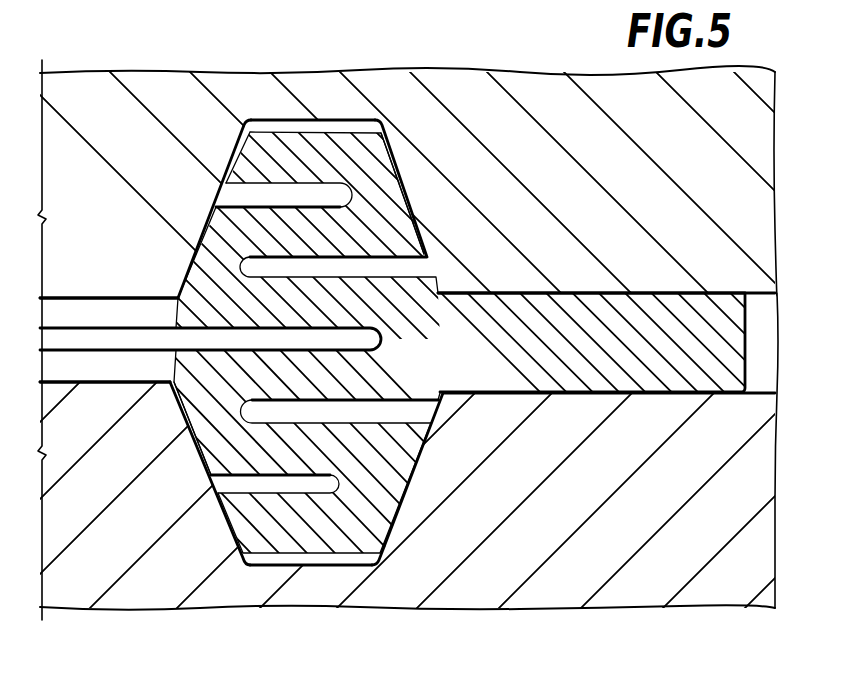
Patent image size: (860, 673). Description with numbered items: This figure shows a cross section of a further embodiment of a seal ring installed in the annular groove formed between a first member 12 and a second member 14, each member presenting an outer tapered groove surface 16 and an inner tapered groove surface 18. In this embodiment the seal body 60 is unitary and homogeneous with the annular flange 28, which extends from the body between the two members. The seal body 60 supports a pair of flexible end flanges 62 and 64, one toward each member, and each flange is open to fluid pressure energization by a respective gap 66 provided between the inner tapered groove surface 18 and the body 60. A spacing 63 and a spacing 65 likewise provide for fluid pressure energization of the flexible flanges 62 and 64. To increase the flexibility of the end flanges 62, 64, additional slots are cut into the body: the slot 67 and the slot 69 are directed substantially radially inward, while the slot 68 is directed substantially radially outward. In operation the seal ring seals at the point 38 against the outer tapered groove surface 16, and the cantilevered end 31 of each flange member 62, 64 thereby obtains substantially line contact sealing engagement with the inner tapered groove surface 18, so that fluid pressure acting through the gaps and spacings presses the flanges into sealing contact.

The first member 12 is at (748, 187).
The second member 14 is at (756, 463).
The outer tapered groove surface 16 is at (400, 197).
The inner tapered groove surface 18 is at (190, 438).
The annular flange 28 is at (638, 307).
The cantilevered end 31 is at (260, 189).
The sealing point 38 is at (389, 132).
The seal body 60 is at (410, 367).
The flexible end flange 62 is at (333, 150).
The spacing 63 is at (240, 162).
The flexible end flange 64 is at (318, 530).
The spacing 65 is at (262, 494).
The gap 66 is at (178, 295).
The slot 67 is at (409, 265).
The slot 68 is at (250, 341).
The slot 69 is at (388, 410).